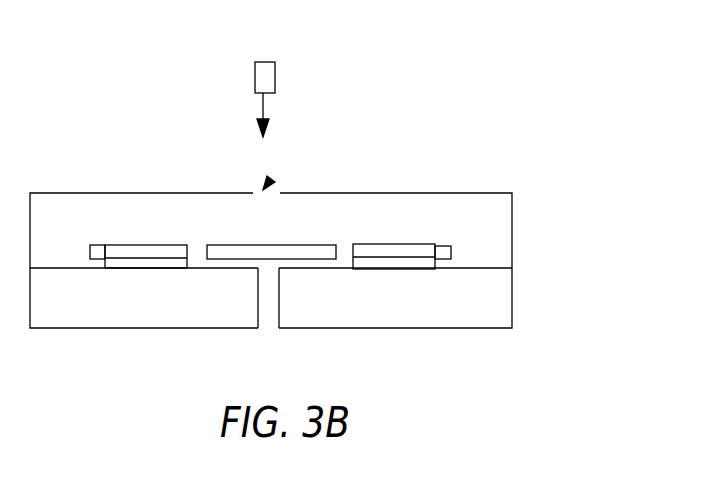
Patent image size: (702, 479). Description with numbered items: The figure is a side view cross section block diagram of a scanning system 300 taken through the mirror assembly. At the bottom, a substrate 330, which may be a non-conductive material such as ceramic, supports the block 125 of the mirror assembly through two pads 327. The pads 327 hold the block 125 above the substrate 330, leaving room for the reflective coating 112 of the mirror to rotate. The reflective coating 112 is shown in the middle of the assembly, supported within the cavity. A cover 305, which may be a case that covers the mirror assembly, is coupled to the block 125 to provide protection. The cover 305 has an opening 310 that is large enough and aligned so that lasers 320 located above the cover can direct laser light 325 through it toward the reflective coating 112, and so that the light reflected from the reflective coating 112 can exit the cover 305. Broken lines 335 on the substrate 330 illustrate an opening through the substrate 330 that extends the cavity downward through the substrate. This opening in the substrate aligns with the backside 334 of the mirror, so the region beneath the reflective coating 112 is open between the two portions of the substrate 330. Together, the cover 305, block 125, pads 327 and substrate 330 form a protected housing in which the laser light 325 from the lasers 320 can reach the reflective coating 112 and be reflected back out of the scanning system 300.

The scanning system 300 is at (497, 55).
The cover 305 is at (373, 193).
The opening 310 is at (272, 178).
The lasers 320 is at (276, 74).
The laser light 325 is at (264, 107).
The substrate 330 is at (512, 297).
The broken lines 335 is at (258, 295).
The pads 327 is at (127, 267).
The block 125 is at (440, 245).
The reflective coating 112 is at (276, 243).
The backside 334 is at (271, 260).